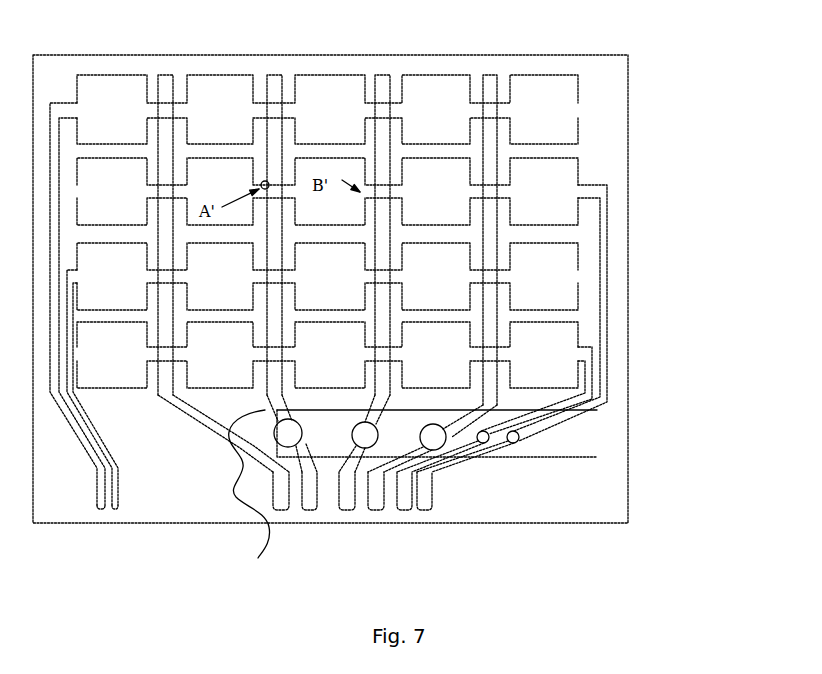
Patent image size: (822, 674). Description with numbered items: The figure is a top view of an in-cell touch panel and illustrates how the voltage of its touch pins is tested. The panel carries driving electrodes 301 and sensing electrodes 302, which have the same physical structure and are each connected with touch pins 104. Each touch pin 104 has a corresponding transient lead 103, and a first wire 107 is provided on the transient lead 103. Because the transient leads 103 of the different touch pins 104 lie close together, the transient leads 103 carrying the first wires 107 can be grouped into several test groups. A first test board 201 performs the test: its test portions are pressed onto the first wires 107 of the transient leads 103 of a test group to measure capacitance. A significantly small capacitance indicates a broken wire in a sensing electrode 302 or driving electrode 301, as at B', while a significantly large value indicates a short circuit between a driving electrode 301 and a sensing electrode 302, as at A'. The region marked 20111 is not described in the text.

The driving electrode 301 is at (585, 95).
The sensing electrode 302 is at (490, 68).
The transient lead 103 is at (283, 393).
The first wire 107 is at (276, 442).
The first test board 201 is at (560, 468).
The touch pin 104 is at (348, 513).
The cut-out boundary region 20111 is at (243, 501).